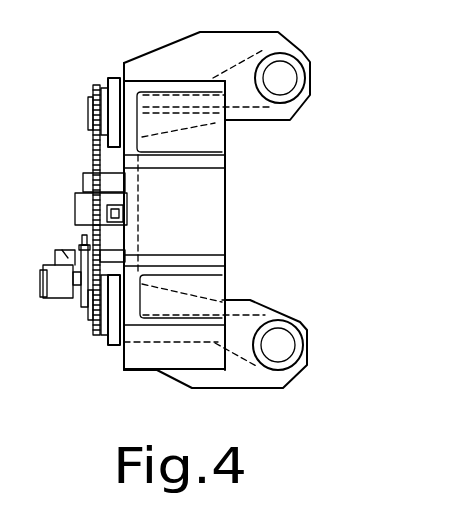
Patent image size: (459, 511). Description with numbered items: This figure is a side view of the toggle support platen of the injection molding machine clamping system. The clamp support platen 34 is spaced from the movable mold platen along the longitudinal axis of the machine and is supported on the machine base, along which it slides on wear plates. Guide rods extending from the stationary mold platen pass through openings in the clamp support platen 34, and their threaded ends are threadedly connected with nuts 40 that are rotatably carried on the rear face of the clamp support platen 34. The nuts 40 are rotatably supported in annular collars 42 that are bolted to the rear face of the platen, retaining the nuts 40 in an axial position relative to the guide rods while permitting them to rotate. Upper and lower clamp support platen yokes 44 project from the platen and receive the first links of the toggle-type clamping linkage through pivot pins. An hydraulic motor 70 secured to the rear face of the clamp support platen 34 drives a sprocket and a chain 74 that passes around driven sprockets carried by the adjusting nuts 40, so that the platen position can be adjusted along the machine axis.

The clamp support platen 34 is at (143, 92).
The nuts 40 is at (106, 80).
The annular collars 42 is at (117, 78).
The clamp support platen yokes 44 is at (293, 45).
The hydraulic motor 70 is at (52, 298).
The chain 74 is at (93, 142).